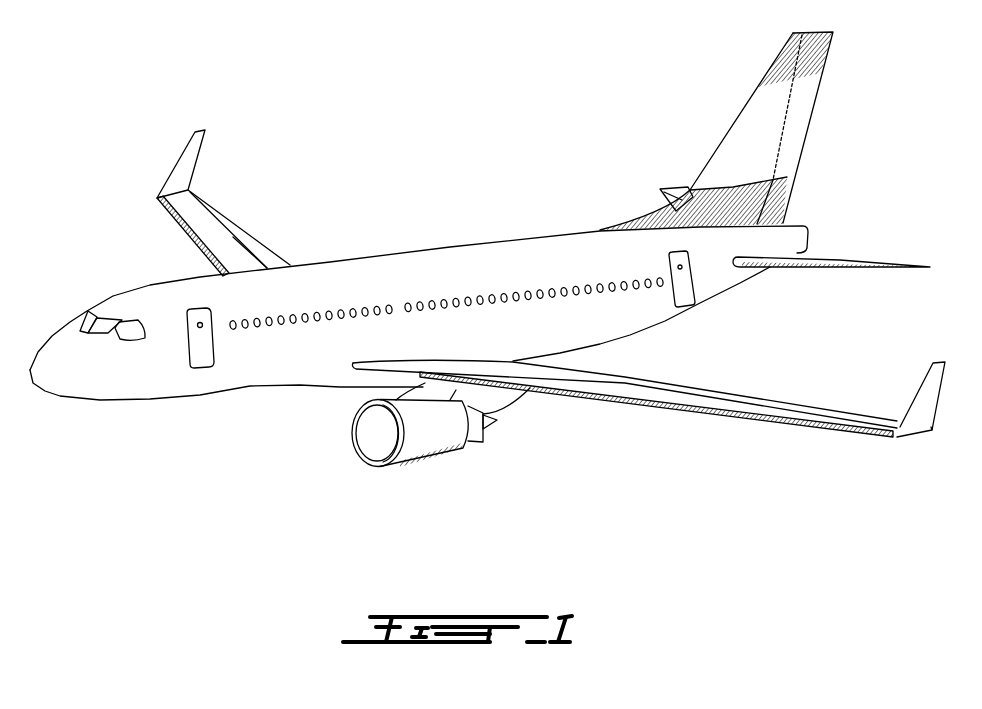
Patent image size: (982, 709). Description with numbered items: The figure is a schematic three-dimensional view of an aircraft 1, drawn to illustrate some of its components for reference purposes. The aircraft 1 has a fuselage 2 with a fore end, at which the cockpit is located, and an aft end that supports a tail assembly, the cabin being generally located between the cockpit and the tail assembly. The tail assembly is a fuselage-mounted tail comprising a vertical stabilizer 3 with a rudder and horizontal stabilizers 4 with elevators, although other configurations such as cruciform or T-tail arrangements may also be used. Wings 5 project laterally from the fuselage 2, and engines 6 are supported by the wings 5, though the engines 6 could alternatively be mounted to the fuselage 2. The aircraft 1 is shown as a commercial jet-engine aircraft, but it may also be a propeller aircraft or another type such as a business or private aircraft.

The aircraft 1 is at (402, 190).
The fuselage 2 is at (250, 368).
The vertical stabilizer 3 is at (755, 127).
The horizontal stabilizers 4 is at (662, 197).
The wings 5 is at (212, 232).
The engines 6 is at (452, 443).